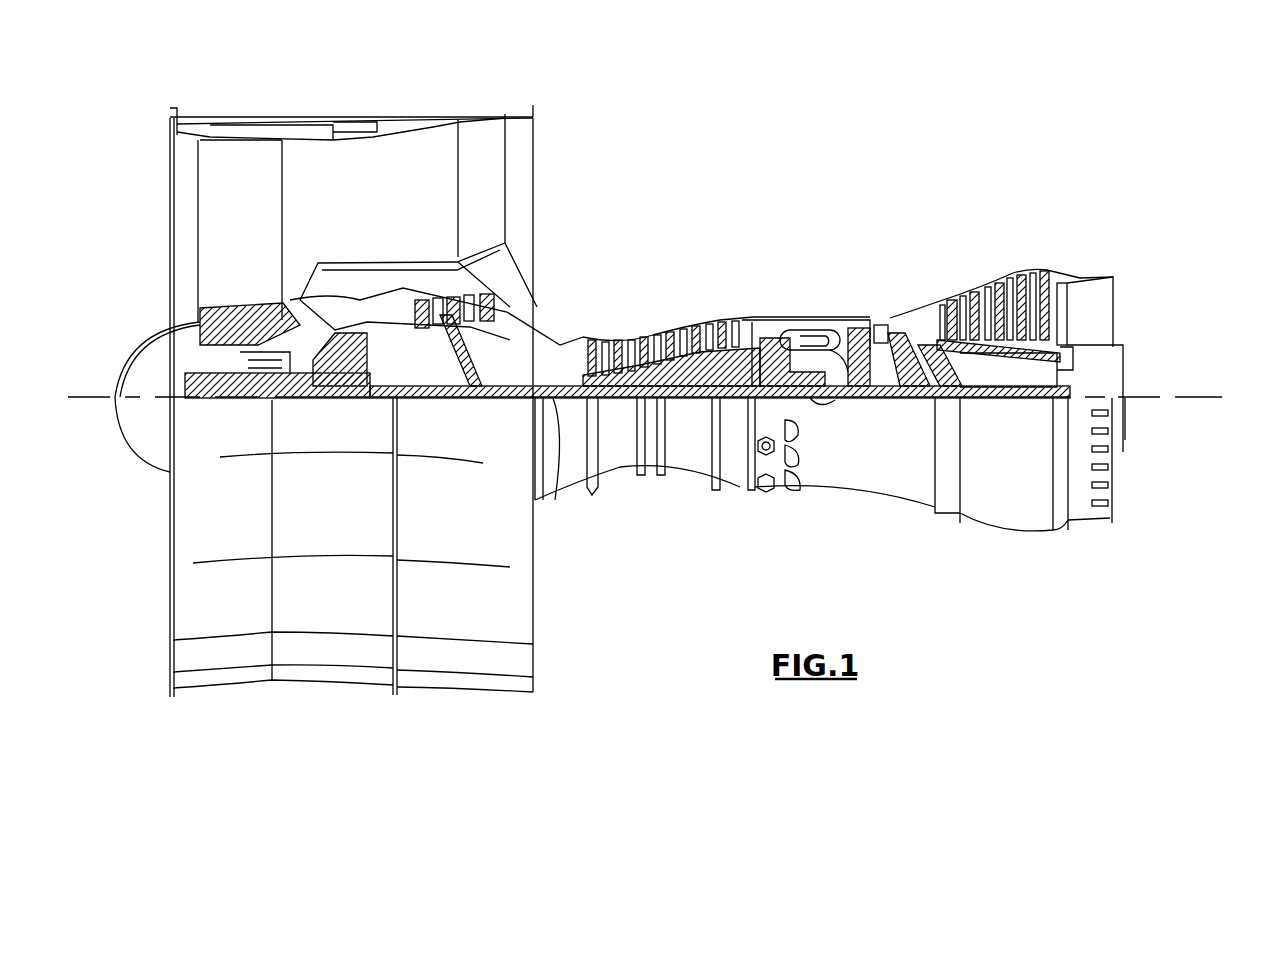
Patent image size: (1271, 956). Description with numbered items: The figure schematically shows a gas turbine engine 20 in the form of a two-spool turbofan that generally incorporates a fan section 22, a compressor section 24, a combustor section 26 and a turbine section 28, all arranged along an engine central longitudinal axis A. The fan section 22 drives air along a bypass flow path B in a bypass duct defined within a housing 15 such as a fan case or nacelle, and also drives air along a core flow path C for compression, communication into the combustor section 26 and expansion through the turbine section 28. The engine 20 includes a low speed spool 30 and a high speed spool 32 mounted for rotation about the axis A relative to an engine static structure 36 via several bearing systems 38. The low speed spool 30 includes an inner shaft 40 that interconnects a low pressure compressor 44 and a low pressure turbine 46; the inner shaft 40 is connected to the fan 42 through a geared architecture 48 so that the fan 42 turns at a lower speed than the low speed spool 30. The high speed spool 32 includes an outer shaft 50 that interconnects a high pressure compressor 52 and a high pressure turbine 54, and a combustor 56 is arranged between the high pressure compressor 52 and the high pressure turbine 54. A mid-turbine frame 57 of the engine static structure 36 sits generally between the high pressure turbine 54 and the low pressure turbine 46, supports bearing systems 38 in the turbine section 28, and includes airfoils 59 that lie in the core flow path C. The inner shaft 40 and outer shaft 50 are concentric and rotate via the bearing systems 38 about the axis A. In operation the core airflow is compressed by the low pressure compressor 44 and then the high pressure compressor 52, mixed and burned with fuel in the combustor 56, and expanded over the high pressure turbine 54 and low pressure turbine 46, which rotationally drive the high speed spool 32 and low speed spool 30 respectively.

The gas turbine engine 20 is at (814, 166).
The fan section 22 is at (283, 105).
The housing 15 is at (356, 118).
The fan 42 is at (222, 240).
The bypass flow path B is at (318, 190).
The core flow path C is at (356, 297).
The low pressure compressor 44 is at (455, 305).
The compressor section 24 is at (584, 305).
The high pressure compressor 52 is at (653, 333).
The high speed spool 32 is at (737, 330).
The combustor section 26 is at (806, 298).
The combustor 56 is at (808, 337).
The high pressure turbine 54 is at (873, 322).
The mid-turbine frame 57 is at (914, 302).
The turbine section 28 is at (955, 258).
The low pressure turbine 46 is at (997, 283).
The airfoils 59 is at (912, 335).
The bearing systems 38 is at (913, 380).
The geared architecture 48 is at (358, 380).
The inner shaft 40 is at (555, 403).
The low speed spool 30 is at (692, 402).
The engine static structure 36 is at (732, 488).
The outer shaft 50 is at (818, 390).
The engine central longitudinal axis A is at (1205, 397).